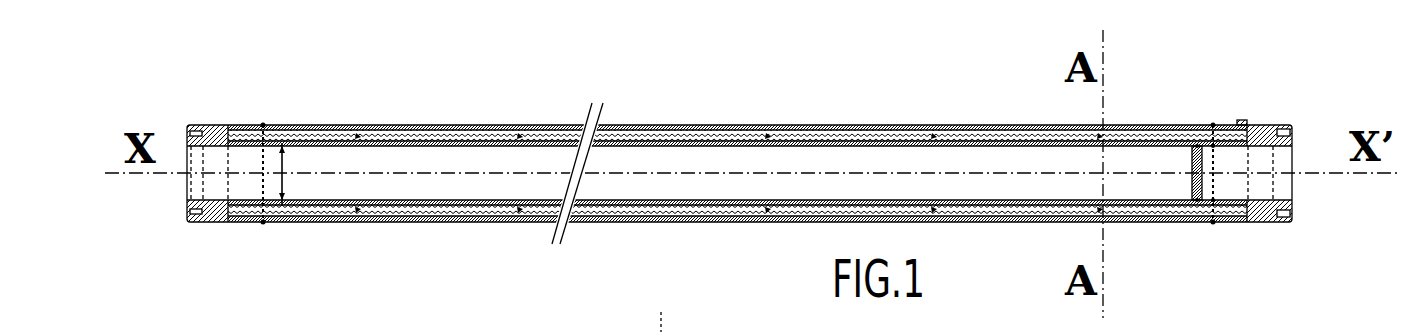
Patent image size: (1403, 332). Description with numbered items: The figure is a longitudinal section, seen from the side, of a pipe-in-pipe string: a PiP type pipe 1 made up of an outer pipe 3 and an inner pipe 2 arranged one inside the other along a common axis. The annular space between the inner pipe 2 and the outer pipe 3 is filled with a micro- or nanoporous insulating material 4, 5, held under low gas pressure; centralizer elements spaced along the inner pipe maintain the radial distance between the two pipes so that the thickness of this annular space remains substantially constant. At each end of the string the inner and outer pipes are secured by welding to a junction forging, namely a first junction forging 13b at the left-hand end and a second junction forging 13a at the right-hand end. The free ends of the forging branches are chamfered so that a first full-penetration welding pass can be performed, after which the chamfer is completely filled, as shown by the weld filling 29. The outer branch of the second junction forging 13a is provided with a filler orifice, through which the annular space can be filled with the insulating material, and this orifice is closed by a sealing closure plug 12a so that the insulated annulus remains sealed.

The PiP type pipe 1 is at (660, 100).
The inner pipe 2 is at (374, 147).
The outer pipe 3 is at (405, 125).
The micro- or nanoporous insulating material 4 is at (737, 146).
The fibrous intermediate layer 5 is at (508, 128).
The first junction forging 13b is at (221, 222).
The second junction forging 13a is at (1260, 127).
The sealing closure plug 12a is at (1241, 120).
The complete filling of the chamfer 29 is at (1208, 122).